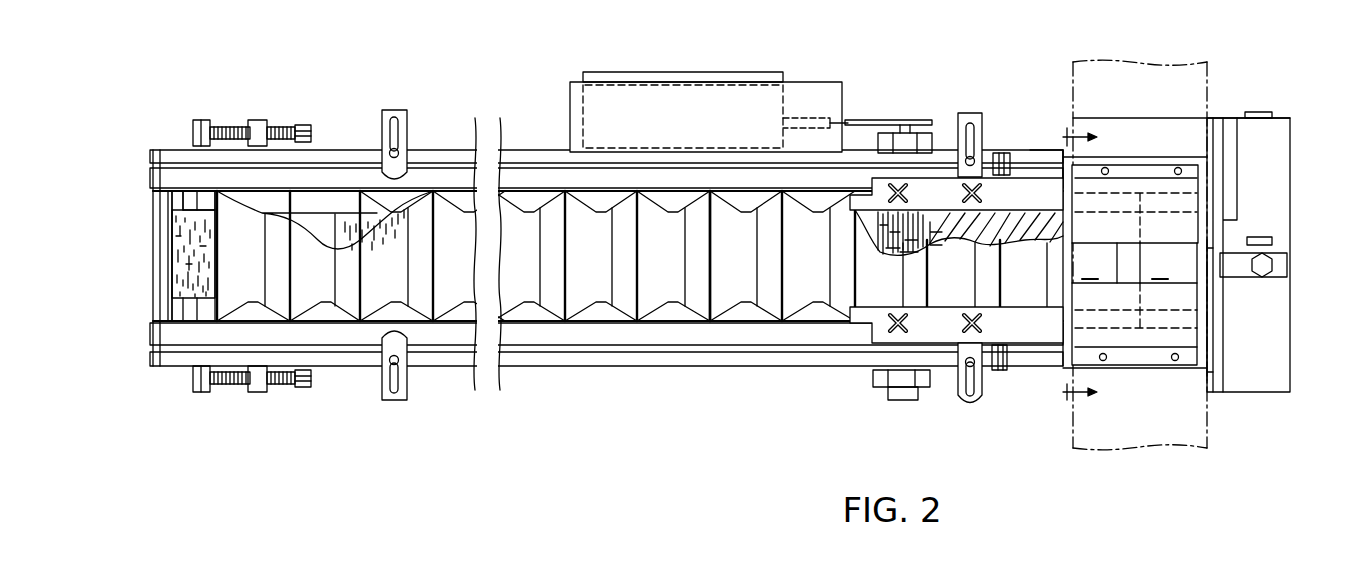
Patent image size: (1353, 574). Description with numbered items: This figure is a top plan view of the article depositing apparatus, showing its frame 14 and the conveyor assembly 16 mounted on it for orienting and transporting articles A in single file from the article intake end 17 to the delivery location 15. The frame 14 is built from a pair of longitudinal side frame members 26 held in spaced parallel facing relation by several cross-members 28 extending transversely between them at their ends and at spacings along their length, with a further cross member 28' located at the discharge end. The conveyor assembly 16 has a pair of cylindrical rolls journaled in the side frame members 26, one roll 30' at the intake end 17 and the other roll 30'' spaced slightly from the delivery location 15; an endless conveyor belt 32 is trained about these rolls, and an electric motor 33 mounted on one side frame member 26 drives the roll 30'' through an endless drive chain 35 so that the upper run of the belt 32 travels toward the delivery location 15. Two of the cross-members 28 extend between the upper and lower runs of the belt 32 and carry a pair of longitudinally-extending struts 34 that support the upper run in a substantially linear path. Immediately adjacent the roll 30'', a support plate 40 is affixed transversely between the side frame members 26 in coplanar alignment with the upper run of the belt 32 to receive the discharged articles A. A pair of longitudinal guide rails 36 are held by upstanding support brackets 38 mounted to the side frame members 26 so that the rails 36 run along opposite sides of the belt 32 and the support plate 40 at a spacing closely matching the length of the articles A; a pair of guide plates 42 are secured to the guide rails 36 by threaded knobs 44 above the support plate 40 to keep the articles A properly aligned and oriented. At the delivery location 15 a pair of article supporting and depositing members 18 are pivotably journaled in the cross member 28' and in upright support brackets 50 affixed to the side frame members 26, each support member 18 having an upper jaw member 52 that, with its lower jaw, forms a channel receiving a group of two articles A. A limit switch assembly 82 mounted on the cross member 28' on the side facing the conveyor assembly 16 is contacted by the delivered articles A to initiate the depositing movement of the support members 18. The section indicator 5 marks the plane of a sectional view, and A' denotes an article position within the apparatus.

The frame 14 is at (570, 367).
The delivery location 15 is at (995, 163).
The conveyor assembly 16 is at (868, 111).
The article intake end 17 is at (170, 250).
The article supporting and depositing members 18 is at (1145, 165).
The longitudinal side frame members 26 is at (562, 157).
The cross-members 28 is at (226, 253).
The cross member 28' is at (1248, 267).
The roll 30' is at (201, 149).
The roll 30'' is at (951, 259).
The endless conveyor belt 32 is at (368, 232).
The electric motor 33 is at (712, 75).
The longitudinally-extending struts 34 is at (343, 222).
The endless drive chain 35 is at (843, 196).
The longitudinal guide rails 36 is at (762, 183).
The upstanding support brackets 38 is at (400, 175).
The support plate 40 is at (1010, 232).
The guide plates 42 is at (1033, 188).
The threaded knobs 44 is at (872, 207).
The upright support brackets 50 is at (997, 205).
The upper jaw member 52 is at (1180, 233).
The limit switch assembly 82 is at (1232, 268).
The section line 5- 5 is at (1089, 266).
The articles A is at (723, 256).
The frame edge A' is at (608, 257).